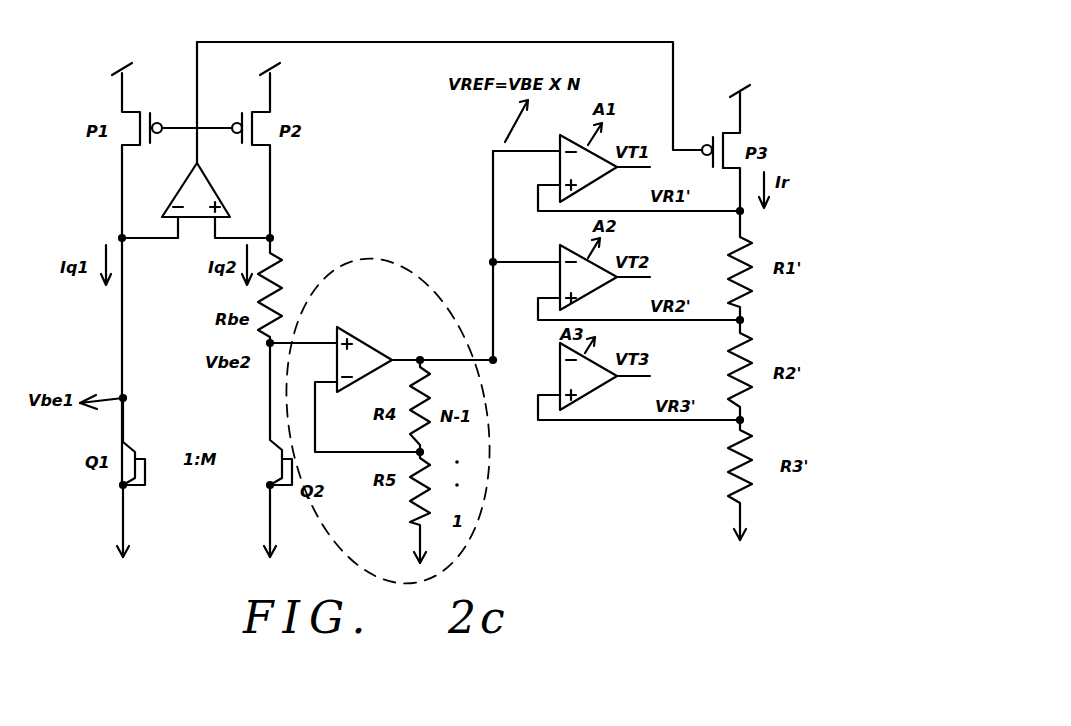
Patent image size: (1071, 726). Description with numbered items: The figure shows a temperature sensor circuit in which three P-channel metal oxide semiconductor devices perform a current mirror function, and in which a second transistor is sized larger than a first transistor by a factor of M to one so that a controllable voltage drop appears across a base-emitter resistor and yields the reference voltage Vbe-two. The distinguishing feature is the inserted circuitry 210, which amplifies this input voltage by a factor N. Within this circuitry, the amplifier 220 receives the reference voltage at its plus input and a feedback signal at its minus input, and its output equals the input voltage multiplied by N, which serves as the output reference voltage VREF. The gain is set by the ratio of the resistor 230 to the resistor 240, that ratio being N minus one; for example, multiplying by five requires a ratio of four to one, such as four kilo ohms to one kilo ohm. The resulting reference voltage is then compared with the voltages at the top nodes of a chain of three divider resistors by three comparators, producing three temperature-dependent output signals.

The circuitry 210 is at (493, 487).
The amplifier 220 is at (355, 353).
The resistor 230 is at (451, 445).
The resistor 240 is at (391, 514).